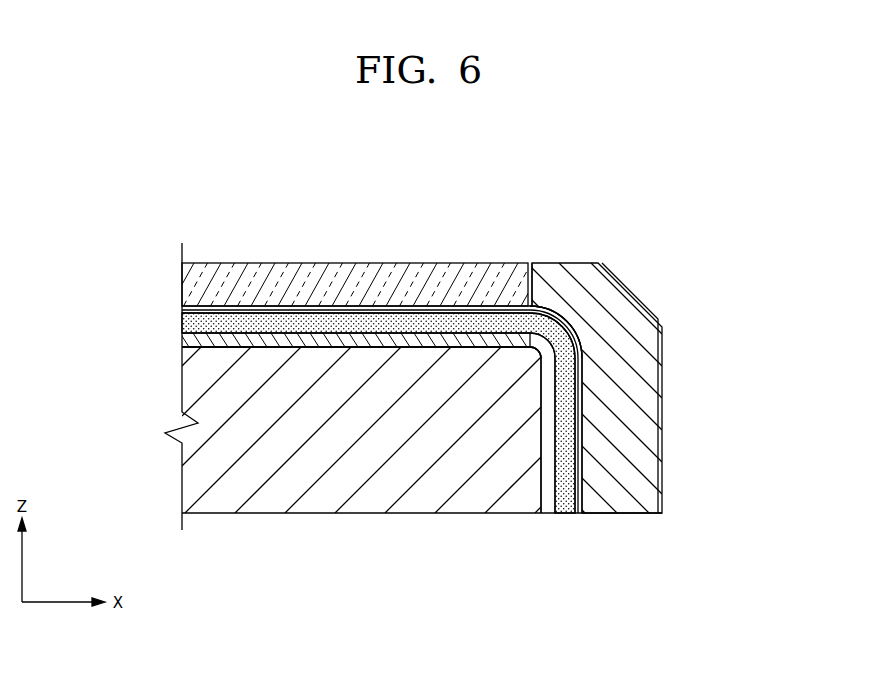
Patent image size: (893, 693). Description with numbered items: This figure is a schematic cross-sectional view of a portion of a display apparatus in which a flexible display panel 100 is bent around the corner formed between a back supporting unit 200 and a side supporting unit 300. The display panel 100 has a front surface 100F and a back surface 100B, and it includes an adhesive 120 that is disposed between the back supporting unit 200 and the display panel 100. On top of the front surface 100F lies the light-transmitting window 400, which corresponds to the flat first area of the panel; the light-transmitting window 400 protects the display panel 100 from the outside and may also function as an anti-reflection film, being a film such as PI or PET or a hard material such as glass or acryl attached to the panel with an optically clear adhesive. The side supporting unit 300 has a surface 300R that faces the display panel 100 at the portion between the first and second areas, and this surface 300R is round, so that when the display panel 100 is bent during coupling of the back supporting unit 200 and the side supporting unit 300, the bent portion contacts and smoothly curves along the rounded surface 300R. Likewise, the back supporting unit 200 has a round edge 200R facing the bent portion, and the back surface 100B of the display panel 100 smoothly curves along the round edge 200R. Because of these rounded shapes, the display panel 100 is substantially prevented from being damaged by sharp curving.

The display panel 100 is at (568, 390).
The front surface 100F is at (308, 310).
The back surface 100B is at (372, 346).
The adhesive 120 is at (245, 345).
The back supporting unit 200 is at (510, 487).
The edge 200R is at (562, 333).
The side supporting unit 300 is at (640, 497).
The surface 300R is at (550, 330).
The light-transmitting window 400 is at (462, 282).